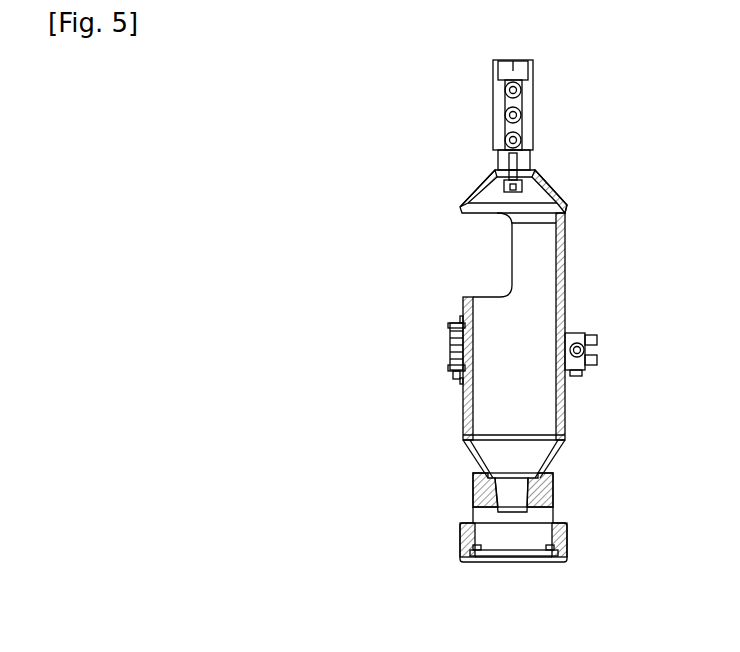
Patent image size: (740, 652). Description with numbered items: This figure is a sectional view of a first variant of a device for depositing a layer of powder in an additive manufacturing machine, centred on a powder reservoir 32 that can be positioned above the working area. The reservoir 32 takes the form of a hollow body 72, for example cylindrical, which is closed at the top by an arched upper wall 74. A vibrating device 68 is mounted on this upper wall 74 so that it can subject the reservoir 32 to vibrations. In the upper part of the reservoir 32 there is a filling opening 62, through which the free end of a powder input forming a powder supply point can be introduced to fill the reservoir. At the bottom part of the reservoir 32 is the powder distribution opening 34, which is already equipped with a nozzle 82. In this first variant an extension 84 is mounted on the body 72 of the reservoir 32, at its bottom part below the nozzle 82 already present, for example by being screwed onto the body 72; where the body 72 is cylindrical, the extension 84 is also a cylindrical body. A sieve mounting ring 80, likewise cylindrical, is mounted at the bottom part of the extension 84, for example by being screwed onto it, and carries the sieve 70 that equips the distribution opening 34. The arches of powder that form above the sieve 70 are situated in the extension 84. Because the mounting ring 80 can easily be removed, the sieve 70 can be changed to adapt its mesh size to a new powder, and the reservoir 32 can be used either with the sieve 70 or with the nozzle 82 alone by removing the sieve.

The powder reservoir 32 is at (527, 295).
The powder distribution opening 34 is at (523, 543).
The filling opening 62 is at (513, 253).
The vibrating device 68 is at (552, 88).
The sieve 70 is at (522, 558).
The hollow body 72 is at (563, 265).
The arched upper wall 74 is at (477, 192).
The mounting ring 80 is at (565, 538).
The nozzle 82 is at (530, 508).
The extension 84 is at (553, 495).